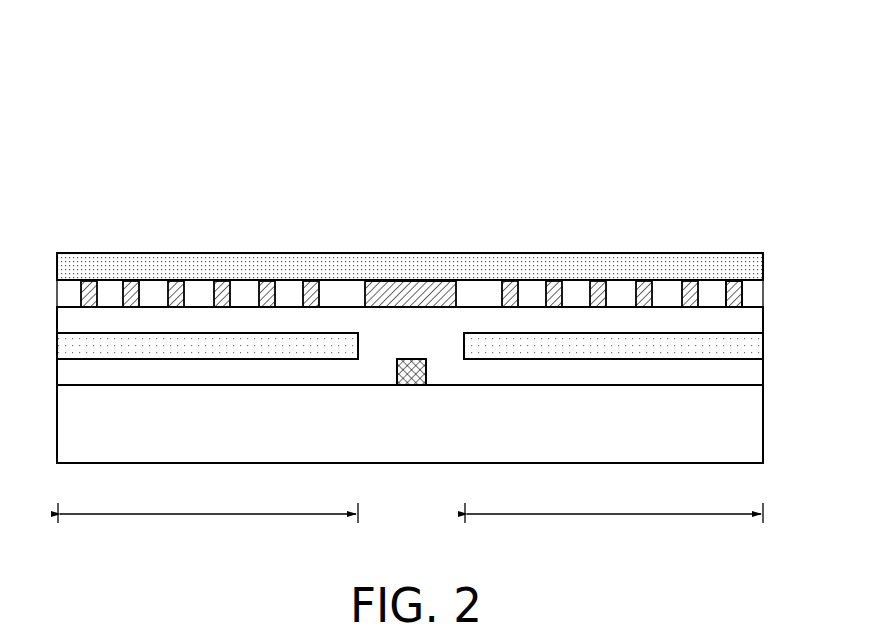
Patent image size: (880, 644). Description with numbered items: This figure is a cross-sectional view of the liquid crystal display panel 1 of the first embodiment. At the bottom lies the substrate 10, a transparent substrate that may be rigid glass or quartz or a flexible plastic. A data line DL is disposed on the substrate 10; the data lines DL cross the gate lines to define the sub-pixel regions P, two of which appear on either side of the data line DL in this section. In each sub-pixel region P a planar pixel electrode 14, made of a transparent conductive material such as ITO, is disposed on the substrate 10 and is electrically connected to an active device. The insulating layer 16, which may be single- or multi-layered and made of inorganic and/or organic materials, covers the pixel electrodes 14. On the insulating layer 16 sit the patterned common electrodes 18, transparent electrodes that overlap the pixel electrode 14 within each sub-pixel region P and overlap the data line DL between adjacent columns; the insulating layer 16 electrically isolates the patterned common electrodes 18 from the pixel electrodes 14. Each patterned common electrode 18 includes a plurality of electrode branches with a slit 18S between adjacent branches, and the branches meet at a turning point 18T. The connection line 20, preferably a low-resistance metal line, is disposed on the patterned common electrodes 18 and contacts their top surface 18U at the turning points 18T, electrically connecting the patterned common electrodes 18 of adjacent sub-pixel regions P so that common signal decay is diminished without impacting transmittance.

The liquid crystal display panel 1 is at (693, 102).
The substrate 10 is at (745, 427).
The pixel electrode 14 is at (748, 352).
The insulating layer 16 is at (747, 318).
The patterned common electrode 18 is at (440, 284).
The top surface 18U is at (385, 280).
The slit 18S is at (288, 292).
The turning point 18T is at (733, 281).
The connection line 20 is at (750, 263).
The data line DL is at (407, 386).
The sub-pixel region P is at (410, 503).